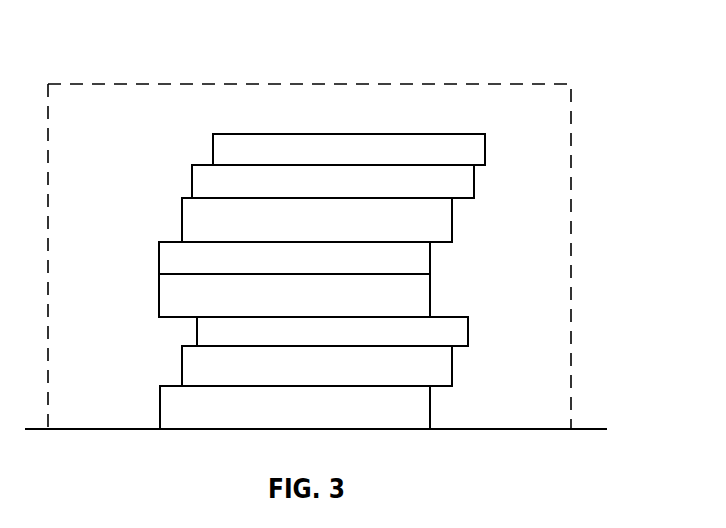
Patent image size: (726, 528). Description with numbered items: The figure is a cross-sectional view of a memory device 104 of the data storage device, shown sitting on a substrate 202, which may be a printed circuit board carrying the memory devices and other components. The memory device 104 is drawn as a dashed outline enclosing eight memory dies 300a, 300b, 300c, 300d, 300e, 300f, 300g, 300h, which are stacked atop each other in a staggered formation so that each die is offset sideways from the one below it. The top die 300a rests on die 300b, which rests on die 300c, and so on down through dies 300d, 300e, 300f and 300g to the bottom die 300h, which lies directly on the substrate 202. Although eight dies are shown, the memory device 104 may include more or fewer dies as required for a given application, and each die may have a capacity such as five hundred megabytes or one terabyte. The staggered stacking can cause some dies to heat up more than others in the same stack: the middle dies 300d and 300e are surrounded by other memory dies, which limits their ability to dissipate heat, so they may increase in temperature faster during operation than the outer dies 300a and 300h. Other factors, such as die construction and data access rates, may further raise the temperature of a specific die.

The memory device 104 is at (138, 84).
The substrate 202 is at (607, 429).
The memory die 300a is at (485, 147).
The memory die 300b is at (192, 167).
The memory die 300c is at (452, 221).
The memory die 300d is at (159, 261).
The memory die 300e is at (430, 296).
The memory die 300f is at (197, 332).
The memory die 300g is at (452, 370).
The memory die 300h is at (160, 402).